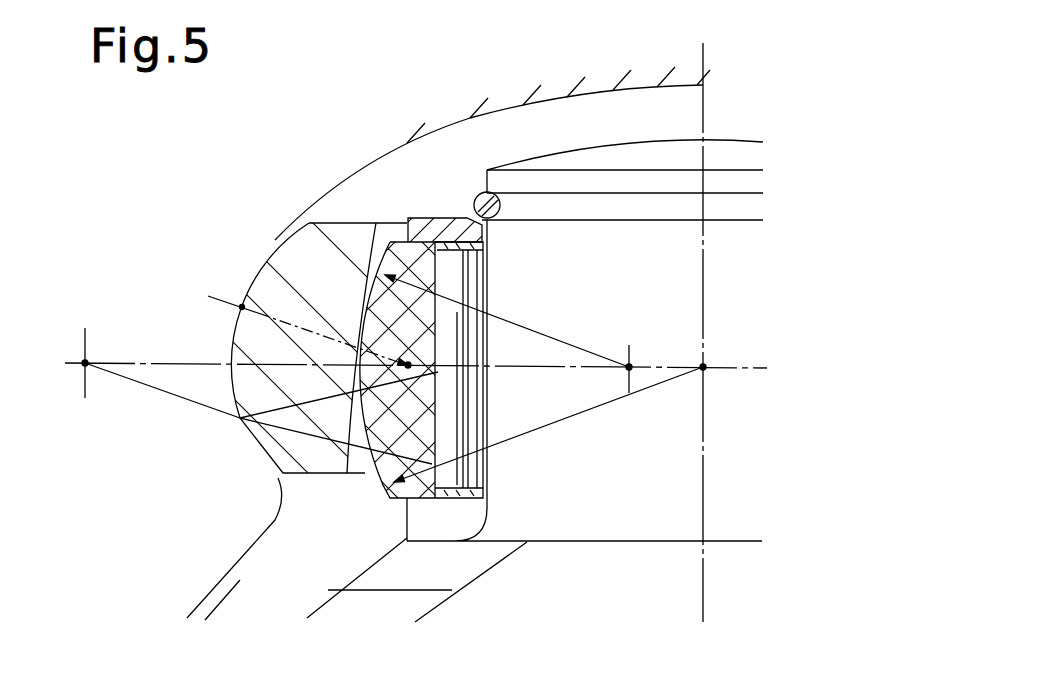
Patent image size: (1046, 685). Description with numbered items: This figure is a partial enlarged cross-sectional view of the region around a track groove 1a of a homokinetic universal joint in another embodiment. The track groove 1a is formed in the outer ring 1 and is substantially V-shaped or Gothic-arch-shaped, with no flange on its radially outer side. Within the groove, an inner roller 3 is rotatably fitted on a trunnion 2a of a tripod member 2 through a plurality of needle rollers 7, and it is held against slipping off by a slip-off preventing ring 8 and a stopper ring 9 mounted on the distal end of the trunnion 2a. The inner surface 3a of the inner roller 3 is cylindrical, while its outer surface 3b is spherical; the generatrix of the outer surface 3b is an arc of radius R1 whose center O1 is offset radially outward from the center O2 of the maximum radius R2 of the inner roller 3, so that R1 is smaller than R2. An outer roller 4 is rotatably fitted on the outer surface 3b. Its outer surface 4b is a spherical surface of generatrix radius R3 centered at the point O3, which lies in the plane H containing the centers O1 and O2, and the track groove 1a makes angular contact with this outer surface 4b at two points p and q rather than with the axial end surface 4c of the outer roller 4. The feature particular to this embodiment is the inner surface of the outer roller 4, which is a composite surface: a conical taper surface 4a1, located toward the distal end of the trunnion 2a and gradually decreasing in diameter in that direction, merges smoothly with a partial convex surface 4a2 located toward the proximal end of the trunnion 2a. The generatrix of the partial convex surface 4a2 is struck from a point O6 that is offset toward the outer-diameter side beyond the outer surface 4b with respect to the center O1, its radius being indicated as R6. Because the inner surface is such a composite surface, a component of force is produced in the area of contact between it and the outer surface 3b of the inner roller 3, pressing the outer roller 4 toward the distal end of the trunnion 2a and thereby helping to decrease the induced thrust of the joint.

The outer ring 1 is at (215, 588).
The track groove 1a is at (230, 346).
The tripod member 2 is at (330, 592).
The trunnion 2a is at (612, 233).
The inner roller 3 is at (403, 245).
The inner surface of the inner roller 3a is at (450, 260).
The outer surface of the inner roller 3b is at (367, 483).
The outer roller 4 is at (281, 488).
The conical taper surface 4a1 is at (377, 236).
The partial convex surface 4a2 is at (356, 466).
The outer surface of the outer roller 4b is at (232, 452).
The axial end surface of the outer roller 4c is at (334, 218).
The needle rollers 7 is at (482, 470).
The slip-off preventing ring 8 is at (458, 218).
The stopper ring 9 is at (487, 192).
The plane H is at (401, 363).
The generatrix center of the outer surface of the inner roller O1 is at (629, 367).
The radius center of the maximum radius of the inner roller O2 is at (703, 367).
The spherical surface center of the outer roller O3 is at (410, 365).
The generatrix center of the partial convex surface O6 is at (86, 362).
The generatrix radius of the outer surface of the inner roller R1 is at (507, 321).
The maximum radius of the inner roller R2 is at (548, 424).
The generatrix radius of the outer surface of the outer roller R3 is at (298, 260).
The radius R6 is at (162, 391).
The contact point p is at (242, 307).
The contact point q is at (240, 418).